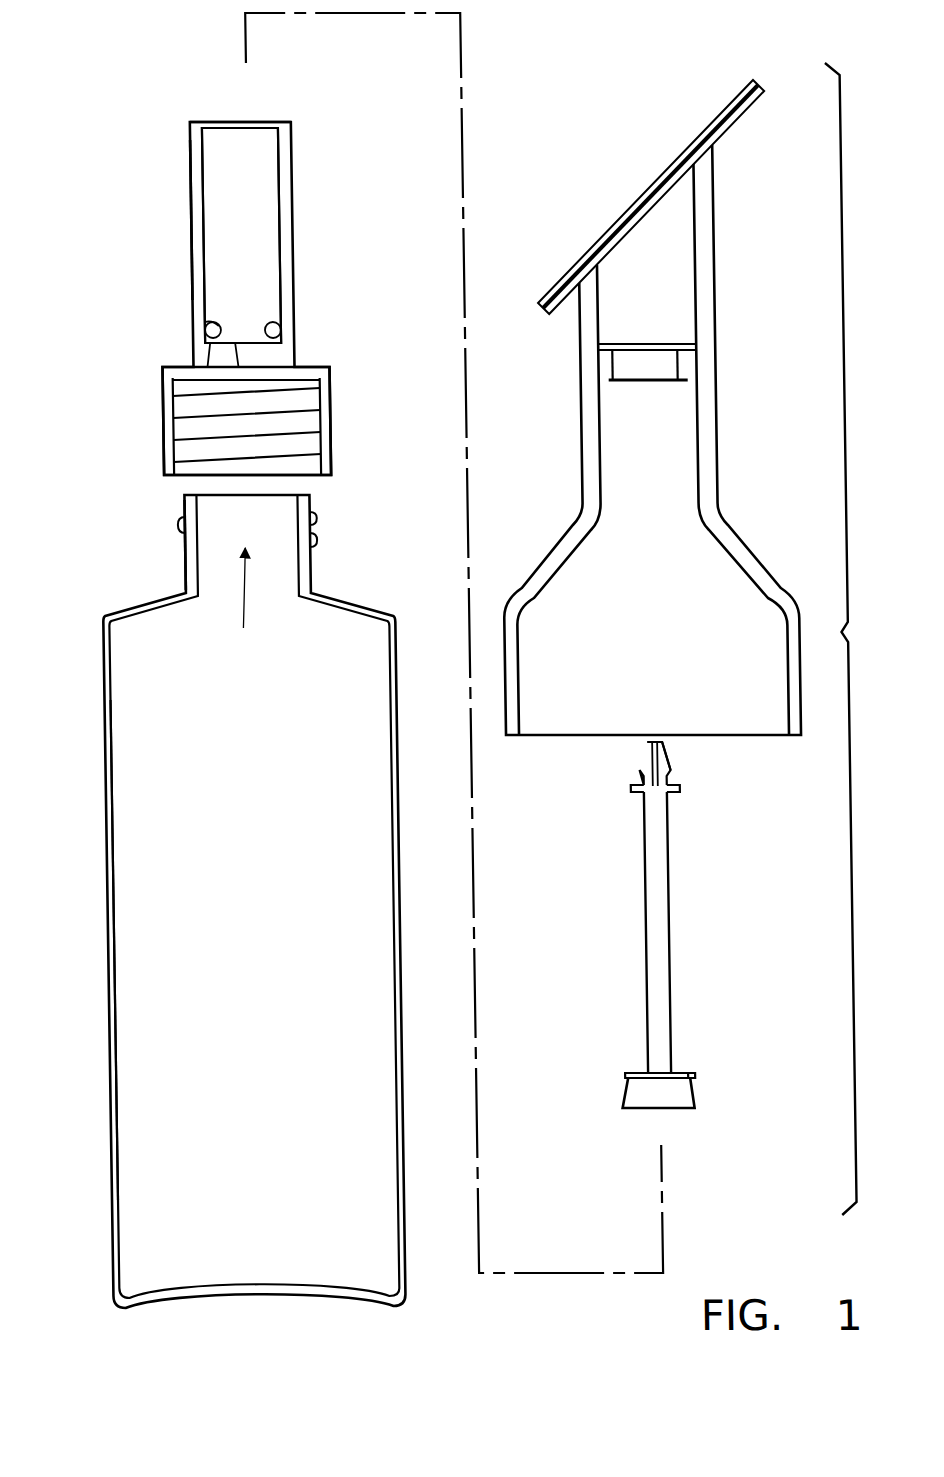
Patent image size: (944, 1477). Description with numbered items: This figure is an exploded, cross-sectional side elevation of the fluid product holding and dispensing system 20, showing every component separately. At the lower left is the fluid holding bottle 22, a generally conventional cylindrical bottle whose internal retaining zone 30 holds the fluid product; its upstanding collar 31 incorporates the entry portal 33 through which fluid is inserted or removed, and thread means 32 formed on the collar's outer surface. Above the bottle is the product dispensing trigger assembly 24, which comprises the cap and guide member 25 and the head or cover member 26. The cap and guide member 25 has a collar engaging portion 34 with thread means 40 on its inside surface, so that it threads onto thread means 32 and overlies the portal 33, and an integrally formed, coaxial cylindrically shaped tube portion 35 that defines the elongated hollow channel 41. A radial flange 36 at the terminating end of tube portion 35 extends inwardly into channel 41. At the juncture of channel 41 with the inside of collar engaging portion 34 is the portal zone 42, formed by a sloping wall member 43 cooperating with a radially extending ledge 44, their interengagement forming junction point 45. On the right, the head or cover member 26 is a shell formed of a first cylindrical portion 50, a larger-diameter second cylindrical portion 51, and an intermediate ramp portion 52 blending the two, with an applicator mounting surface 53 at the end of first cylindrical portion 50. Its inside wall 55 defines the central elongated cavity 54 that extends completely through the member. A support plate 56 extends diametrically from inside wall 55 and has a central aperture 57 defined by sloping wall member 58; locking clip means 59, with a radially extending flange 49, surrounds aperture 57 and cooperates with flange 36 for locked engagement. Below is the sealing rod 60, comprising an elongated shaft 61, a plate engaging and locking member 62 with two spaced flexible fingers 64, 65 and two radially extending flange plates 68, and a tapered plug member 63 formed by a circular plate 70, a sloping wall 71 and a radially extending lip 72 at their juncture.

The fluid product holding and dispensing system 20 is at (160, 122).
The fluid holding bottle 22 is at (224, 901).
The product dispensing trigger assembly 24 is at (256, 274).
The cap and guide member 25 is at (186, 196).
The head or cover member 26 is at (890, 651).
The internal retaining zone 30 is at (224, 907).
The collar 31 is at (177, 573).
The thread means 32 is at (309, 540).
The entry portal 33 is at (239, 604).
The collar engaging portion 34 is at (158, 445).
The cylindrically shaped tube portion 35 is at (190, 168).
The radial flange 36 is at (220, 127).
The thread means 40 is at (304, 426).
The hollow channel 41 is at (254, 214).
The portal zone 42 is at (232, 358).
The sloping wall member 43 is at (276, 328).
The radially extending ledge 44 is at (200, 330).
The junction point 45 is at (205, 322).
The radially extending flange 49 is at (608, 382).
The first cylindrical portion 50 is at (672, 395).
The second cylindrical portion 51 is at (798, 702).
The intermediate ramp portion 52 is at (750, 553).
The applicator mounting surface 53 is at (738, 104).
The central elongated channel or cavity 54 is at (640, 232).
The inside wall 55 is at (592, 458).
The support plate 56 is at (628, 344).
The central aperture 57 is at (648, 342).
The sloping wall member 58 is at (656, 381).
The locking clip means 59 is at (674, 384).
The sealing rod 60 is at (665, 909).
The shaft 61 is at (660, 878).
The plate engaging and locking member 62 is at (628, 760).
The tapered plug member 63 is at (680, 1080).
The flexible finger 64 is at (640, 750).
The flexible finger 65 is at (664, 746).
The radially extending flange plates 68 is at (622, 789).
The circular shaped plate 70 is at (674, 1074).
The sloping wall 71 is at (610, 1095).
The radially extending lip 72 is at (608, 1076).